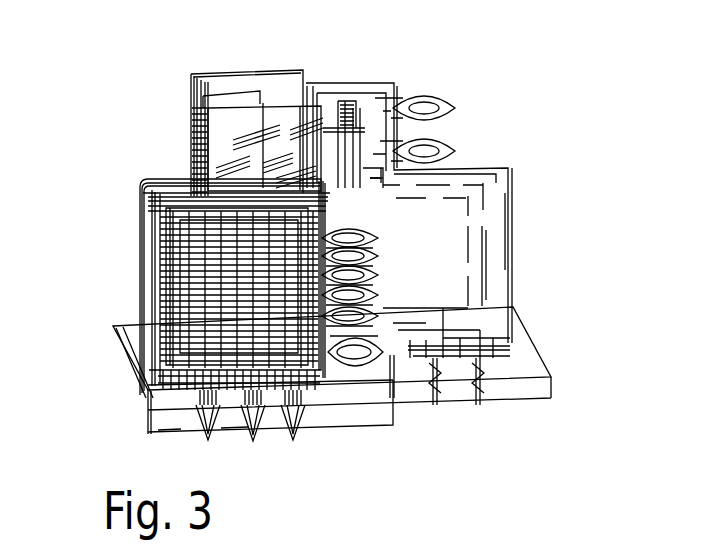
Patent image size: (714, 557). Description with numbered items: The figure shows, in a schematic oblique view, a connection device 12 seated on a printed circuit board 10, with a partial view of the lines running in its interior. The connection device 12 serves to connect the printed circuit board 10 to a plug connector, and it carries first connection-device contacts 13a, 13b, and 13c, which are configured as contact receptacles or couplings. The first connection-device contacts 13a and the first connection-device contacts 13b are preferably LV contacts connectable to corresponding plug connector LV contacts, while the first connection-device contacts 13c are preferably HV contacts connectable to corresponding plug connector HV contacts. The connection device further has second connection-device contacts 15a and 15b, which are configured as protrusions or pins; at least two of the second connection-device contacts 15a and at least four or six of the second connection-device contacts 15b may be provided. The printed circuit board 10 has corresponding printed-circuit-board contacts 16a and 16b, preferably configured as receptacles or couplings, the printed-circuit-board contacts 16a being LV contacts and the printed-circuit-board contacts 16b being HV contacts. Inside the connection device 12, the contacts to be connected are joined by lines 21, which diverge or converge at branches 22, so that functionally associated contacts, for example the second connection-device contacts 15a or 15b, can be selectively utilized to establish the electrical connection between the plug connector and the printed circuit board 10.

The printed circuit board 10 is at (558, 376).
The connection device 12 is at (478, 44).
The first connection-device contacts 13a is at (140, 229).
The first connection-device contacts 13b is at (176, 151).
The first connection-device contacts 13c is at (152, 297).
The second connection-device contacts 15a is at (428, 384).
The second connection-device contacts 15b is at (450, 104).
The printed-circuit-board contacts 16a is at (470, 384).
The printed-circuit-board contacts 16b is at (283, 432).
The lines 21 is at (465, 220).
The branches 22 is at (362, 185).